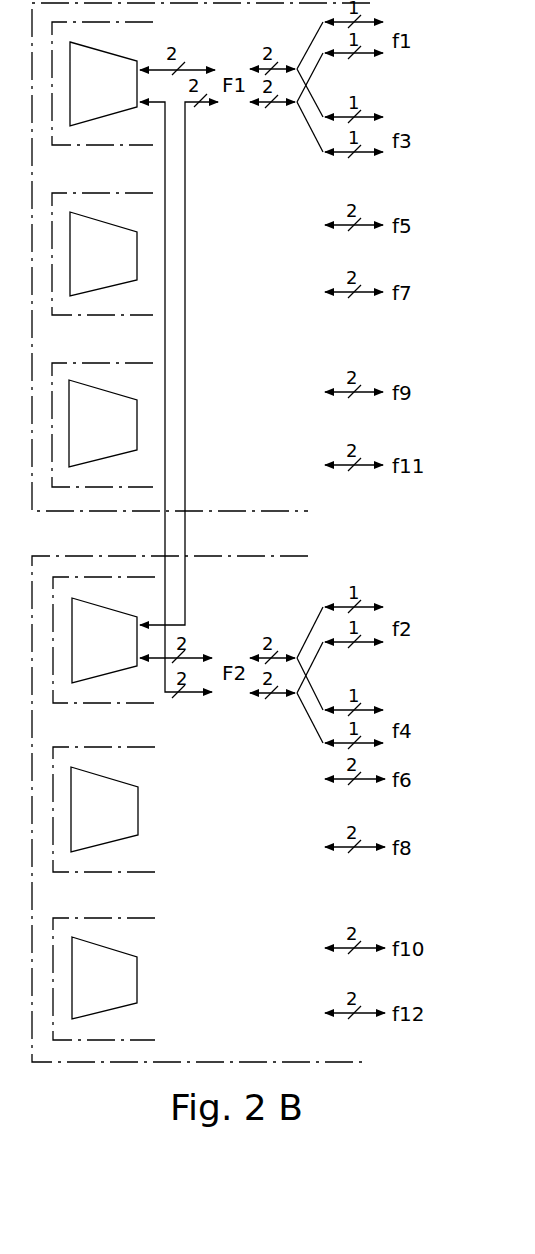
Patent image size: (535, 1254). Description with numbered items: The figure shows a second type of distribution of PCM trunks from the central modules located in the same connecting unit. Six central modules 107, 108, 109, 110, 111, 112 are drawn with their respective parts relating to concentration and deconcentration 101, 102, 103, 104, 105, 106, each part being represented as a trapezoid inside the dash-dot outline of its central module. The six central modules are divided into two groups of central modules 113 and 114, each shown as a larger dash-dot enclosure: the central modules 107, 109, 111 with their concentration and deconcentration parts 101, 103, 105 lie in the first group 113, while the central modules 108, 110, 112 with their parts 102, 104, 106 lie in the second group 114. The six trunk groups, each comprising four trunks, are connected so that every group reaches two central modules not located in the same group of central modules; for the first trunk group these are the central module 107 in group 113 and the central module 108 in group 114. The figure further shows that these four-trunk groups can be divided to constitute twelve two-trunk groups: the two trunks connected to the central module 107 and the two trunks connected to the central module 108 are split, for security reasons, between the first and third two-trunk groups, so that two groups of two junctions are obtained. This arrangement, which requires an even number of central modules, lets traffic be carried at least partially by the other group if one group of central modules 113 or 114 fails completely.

The concentration and deconcentration part 101 is at (101, 115).
The concentration and deconcentration part 102 is at (105, 675).
The concentration and deconcentration part 103 is at (100, 288).
The concentration and deconcentration part 104 is at (103, 843).
The concentration and deconcentration part 105 is at (107, 457).
The concentration and deconcentration part 106 is at (112, 1007).
The central module 107 is at (57, 146).
The central module 108 is at (65, 705).
The central module 109 is at (57, 316).
The central module 110 is at (58, 873).
The central module 111 is at (113, 362).
The central module 112 is at (108, 918).
The group of central modules 113 is at (47, 512).
The group of central modules 114 is at (105, 557).